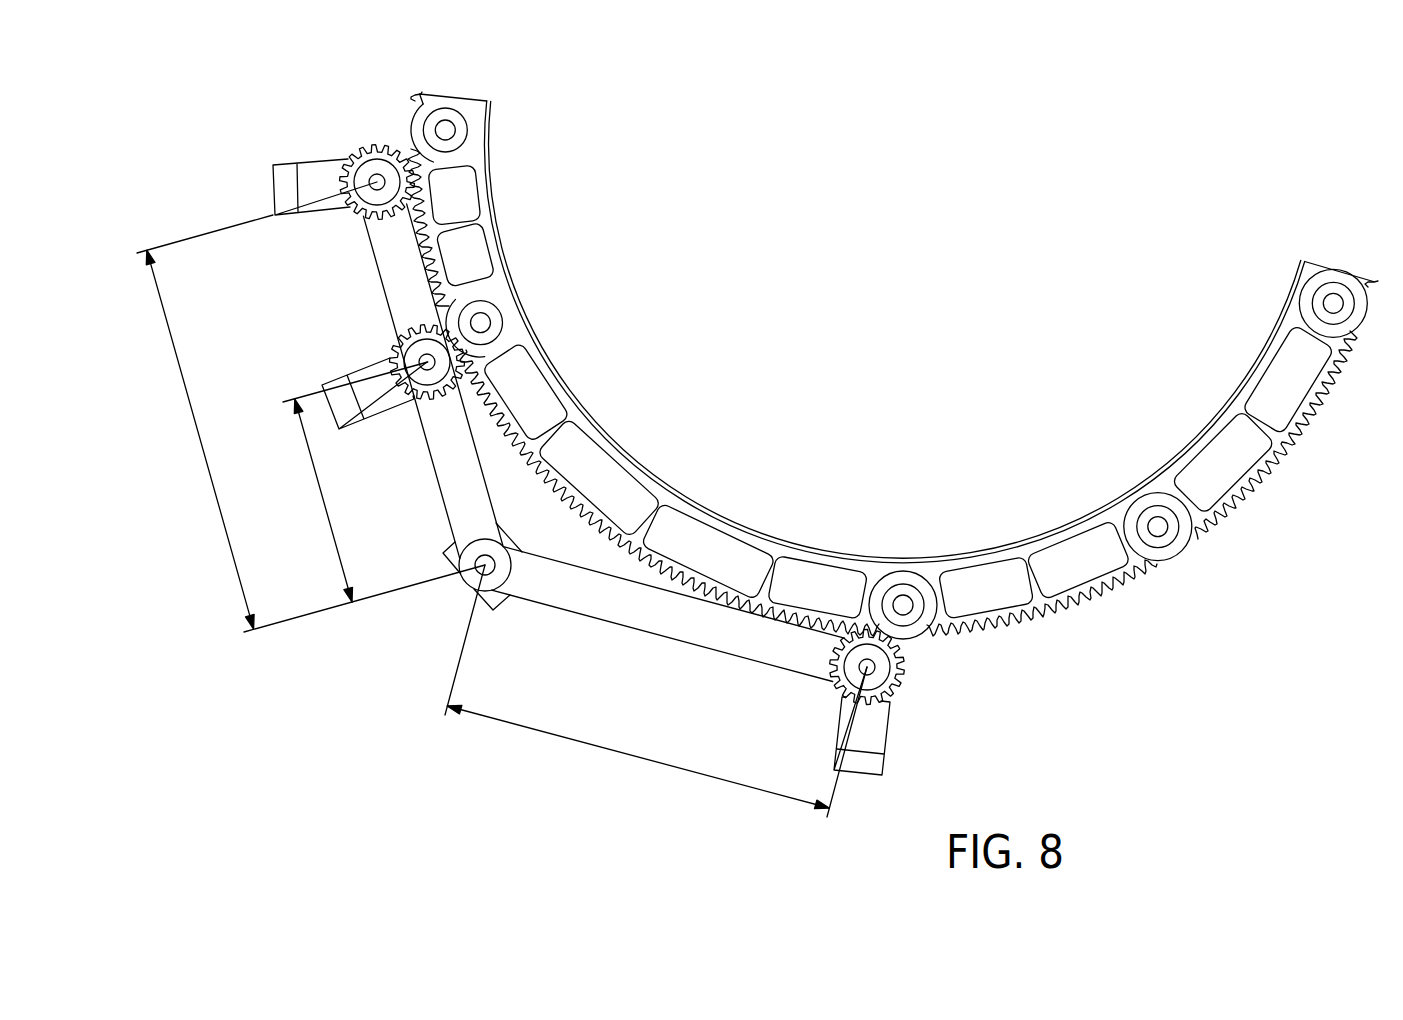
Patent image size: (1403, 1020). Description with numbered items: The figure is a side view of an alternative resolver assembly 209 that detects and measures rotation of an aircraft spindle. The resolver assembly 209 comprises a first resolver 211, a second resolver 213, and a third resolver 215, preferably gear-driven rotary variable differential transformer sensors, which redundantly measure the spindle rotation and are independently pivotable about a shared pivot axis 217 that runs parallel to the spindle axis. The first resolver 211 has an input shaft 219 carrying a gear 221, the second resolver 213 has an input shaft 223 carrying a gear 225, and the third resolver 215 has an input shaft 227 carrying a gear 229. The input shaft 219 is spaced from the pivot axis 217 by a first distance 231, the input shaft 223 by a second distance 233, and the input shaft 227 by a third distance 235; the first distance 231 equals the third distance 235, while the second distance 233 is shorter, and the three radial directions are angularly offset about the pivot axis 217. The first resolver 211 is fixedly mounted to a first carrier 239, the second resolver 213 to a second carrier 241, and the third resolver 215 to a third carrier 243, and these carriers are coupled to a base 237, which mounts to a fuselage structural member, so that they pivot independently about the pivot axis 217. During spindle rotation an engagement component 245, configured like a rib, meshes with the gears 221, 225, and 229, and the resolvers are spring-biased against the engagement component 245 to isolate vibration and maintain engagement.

The resolver assembly 209 is at (467, 588).
The first resolver 211 is at (272, 180).
The second resolver 213 is at (325, 384).
The third resolver 215 is at (890, 740).
The pivot axis 217 is at (515, 602).
The input shaft 219 is at (378, 182).
The gear 221 is at (385, 148).
The input shaft 223 is at (435, 378).
The gear 225 is at (383, 317).
The input shaft 227 is at (858, 668).
The gear 229 is at (907, 672).
The first distance 231 is at (195, 436).
The second distance 233 is at (318, 506).
The third distance 235 is at (638, 752).
The base 237 is at (487, 610).
The first carrier 239 is at (380, 250).
The second carrier 241 is at (448, 490).
The third carrier 243 is at (660, 627).
The engagement component 245 is at (488, 160).